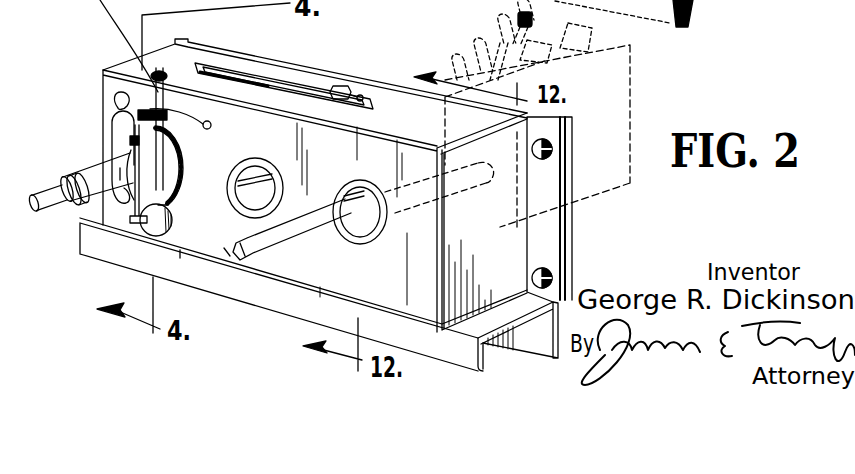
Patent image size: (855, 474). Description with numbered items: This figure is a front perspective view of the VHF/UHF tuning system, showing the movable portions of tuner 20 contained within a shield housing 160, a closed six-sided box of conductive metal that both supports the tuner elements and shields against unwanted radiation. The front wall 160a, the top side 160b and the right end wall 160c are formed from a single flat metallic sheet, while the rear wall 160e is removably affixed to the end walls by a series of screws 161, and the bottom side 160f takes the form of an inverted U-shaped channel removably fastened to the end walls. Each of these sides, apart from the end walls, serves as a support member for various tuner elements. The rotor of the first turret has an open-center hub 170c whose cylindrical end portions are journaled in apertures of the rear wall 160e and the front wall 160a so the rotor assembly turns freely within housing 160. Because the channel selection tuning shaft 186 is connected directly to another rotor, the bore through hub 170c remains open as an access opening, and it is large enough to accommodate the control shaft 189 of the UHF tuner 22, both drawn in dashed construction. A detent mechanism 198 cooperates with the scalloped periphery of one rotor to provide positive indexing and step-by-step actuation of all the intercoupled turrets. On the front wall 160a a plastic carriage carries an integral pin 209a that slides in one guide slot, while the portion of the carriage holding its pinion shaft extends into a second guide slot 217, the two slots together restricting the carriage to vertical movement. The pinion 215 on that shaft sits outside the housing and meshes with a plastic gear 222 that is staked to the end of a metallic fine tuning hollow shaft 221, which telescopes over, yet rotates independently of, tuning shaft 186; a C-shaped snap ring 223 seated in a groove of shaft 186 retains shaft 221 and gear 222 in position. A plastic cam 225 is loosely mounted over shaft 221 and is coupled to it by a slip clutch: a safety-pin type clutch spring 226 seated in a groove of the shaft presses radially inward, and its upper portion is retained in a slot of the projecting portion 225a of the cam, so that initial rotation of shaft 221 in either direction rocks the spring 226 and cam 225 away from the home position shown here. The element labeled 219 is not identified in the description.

The shield housing 160 is at (322, 288).
The front wall 160a is at (263, 286).
The top side 160b is at (398, 100).
The right end wall 160c is at (473, 237).
The rear wall 160e is at (570, 231).
The bottom side 160f is at (483, 350).
The screws 161 is at (553, 278).
The detent mechanism 198 is at (297, 92).
The UHF tuner 22 is at (668, 96).
The open-center hub 170c is at (316, 246).
The vertical shaft 219 is at (153, 95).
The pin 209a is at (140, 108).
The projecting portion of cam 225a is at (116, 100).
The clutch spring 226 is at (110, 135).
The tuner 20 is at (80, 132).
The cam 225 is at (183, 157).
The gear 222 is at (172, 200).
The pinion 215 is at (152, 226).
The fine tuning hollow shaft 221 is at (80, 168).
The snap ring 223 is at (66, 174).
The tuning shaft 186 is at (58, 211).
The guide slot 217 is at (180, 258).
The control shaft 189 is at (227, 253).